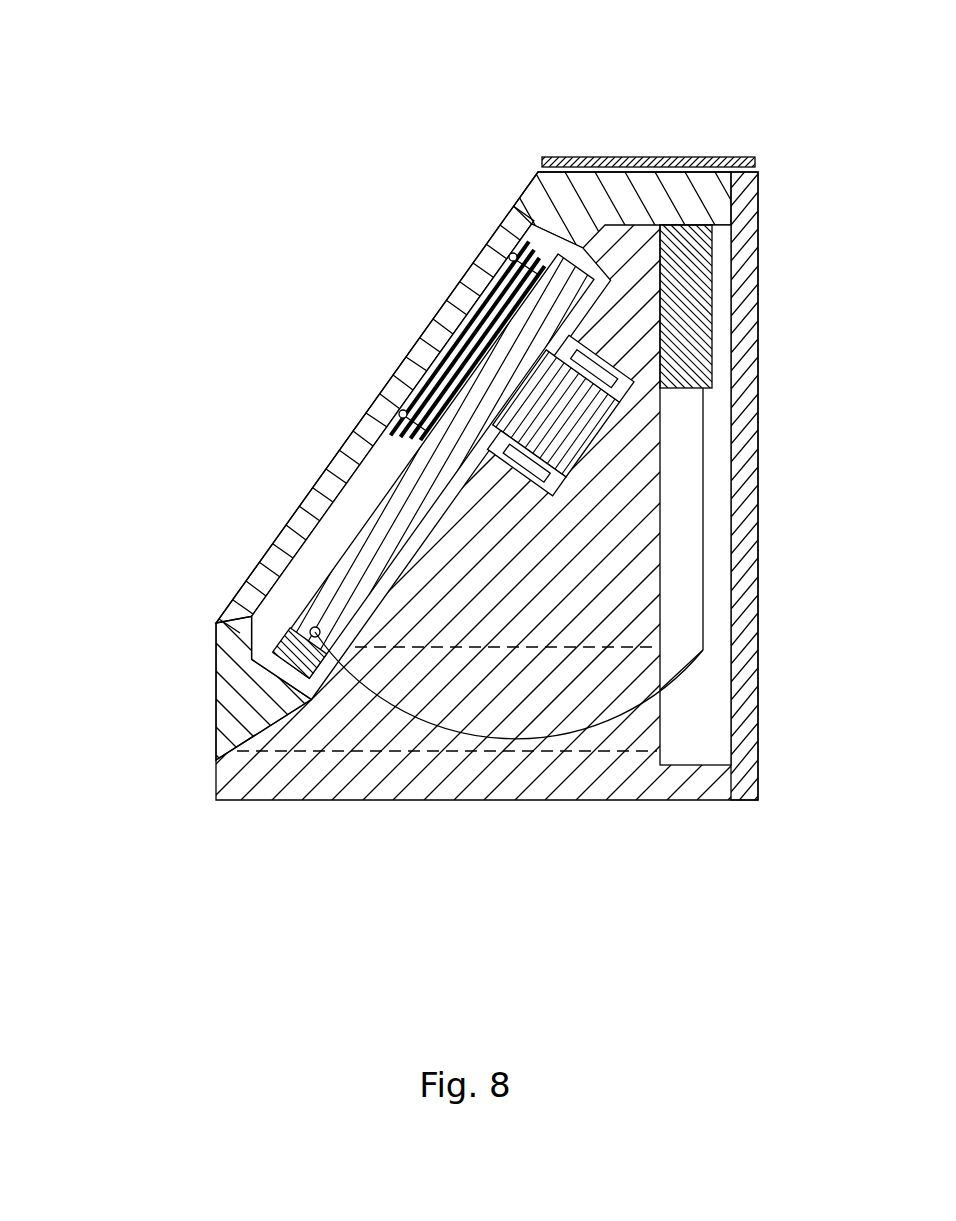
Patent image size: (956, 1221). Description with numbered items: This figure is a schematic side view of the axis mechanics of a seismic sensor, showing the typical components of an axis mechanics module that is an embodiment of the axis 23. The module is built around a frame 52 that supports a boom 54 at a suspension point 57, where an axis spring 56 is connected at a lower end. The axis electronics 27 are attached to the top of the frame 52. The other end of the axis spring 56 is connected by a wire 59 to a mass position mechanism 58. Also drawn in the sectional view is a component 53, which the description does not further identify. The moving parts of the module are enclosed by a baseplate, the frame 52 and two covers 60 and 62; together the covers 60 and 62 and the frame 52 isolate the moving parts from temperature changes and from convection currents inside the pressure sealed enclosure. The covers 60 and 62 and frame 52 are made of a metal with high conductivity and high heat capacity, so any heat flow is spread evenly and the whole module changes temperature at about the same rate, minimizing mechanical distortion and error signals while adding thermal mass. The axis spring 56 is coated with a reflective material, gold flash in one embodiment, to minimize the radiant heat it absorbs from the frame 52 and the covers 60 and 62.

The axis mechanics 23 is at (328, 832).
The axis electronics 27 is at (680, 157).
The frame 52 is at (462, 780).
The conductor wires 53 is at (452, 331).
The boom 54 is at (393, 490).
The axis spring 56 is at (605, 723).
The suspension point 57 is at (308, 632).
The mass position mechanism 58 is at (705, 325).
The wire 59 is at (705, 513).
The cover 60 is at (228, 705).
The cover 62 is at (748, 645).